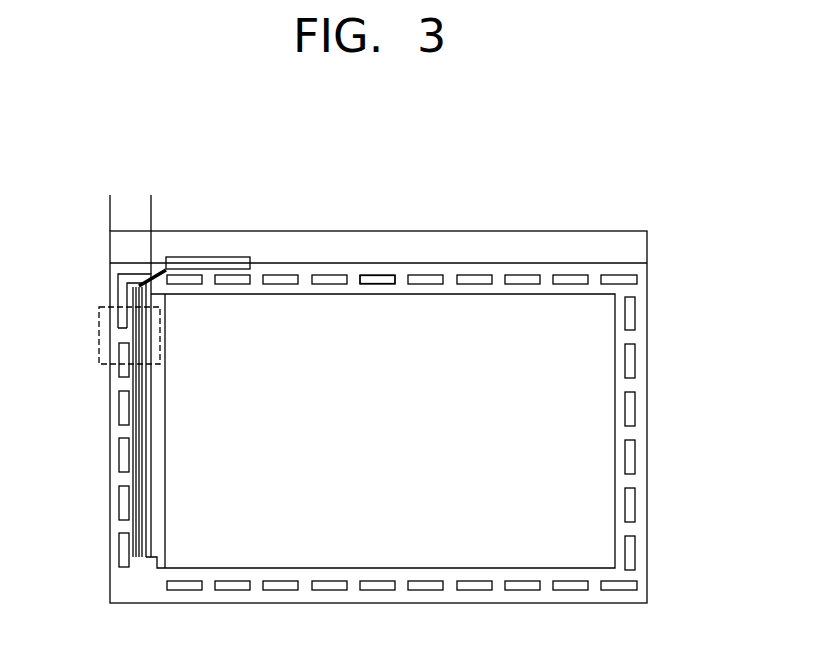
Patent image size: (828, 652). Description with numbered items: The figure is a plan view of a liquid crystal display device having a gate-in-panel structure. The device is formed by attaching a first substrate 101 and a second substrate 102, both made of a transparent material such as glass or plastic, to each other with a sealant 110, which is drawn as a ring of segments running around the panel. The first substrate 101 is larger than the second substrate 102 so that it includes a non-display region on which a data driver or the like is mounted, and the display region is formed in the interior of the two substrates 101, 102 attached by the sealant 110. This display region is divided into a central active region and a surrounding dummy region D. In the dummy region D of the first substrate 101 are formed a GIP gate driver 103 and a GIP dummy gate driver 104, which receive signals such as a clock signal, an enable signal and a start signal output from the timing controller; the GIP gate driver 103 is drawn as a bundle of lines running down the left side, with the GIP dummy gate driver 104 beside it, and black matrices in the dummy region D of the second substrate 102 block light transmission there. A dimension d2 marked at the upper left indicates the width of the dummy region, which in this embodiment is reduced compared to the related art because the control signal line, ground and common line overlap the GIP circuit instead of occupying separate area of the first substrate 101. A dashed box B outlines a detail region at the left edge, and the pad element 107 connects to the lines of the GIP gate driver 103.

The first substrate 101 is at (643, 249).
The second substrate 102 is at (485, 268).
The GIP gate driver 103 is at (155, 408).
The GIP dummy gate driver 104 is at (150, 559).
The electrode pad 107 is at (207, 266).
The sealant 110 is at (378, 280).
The region B is at (96, 332).
The dummy region D is at (645, 433).
The dummy region width d2 is at (151, 202).